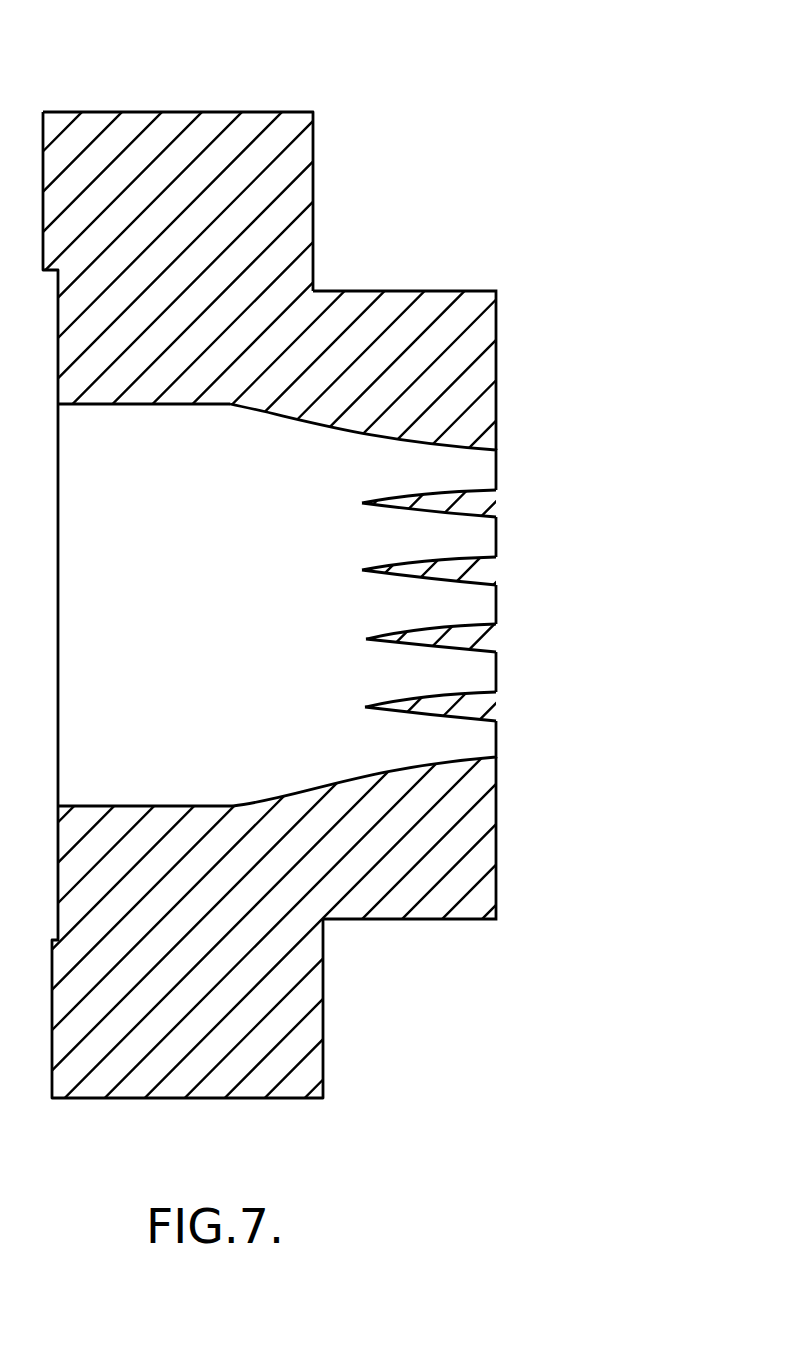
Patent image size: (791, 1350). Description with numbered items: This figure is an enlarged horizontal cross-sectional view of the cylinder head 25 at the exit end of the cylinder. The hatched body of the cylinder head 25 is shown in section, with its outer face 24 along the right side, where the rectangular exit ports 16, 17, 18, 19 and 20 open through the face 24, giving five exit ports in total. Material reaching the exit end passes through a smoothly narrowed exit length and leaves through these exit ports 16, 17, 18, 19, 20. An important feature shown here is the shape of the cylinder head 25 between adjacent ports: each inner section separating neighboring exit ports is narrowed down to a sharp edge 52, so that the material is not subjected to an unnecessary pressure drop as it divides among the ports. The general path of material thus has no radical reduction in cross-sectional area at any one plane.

The cylinder head 25 is at (170, 112).
The face 24 is at (497, 366).
The exit port 20 is at (497, 469).
The exit port 19 is at (497, 532).
The exit port 16 is at (497, 603).
The exit port 18 is at (497, 672).
The exit port 17 is at (497, 743).
The sharp edge 52 is at (357, 502).